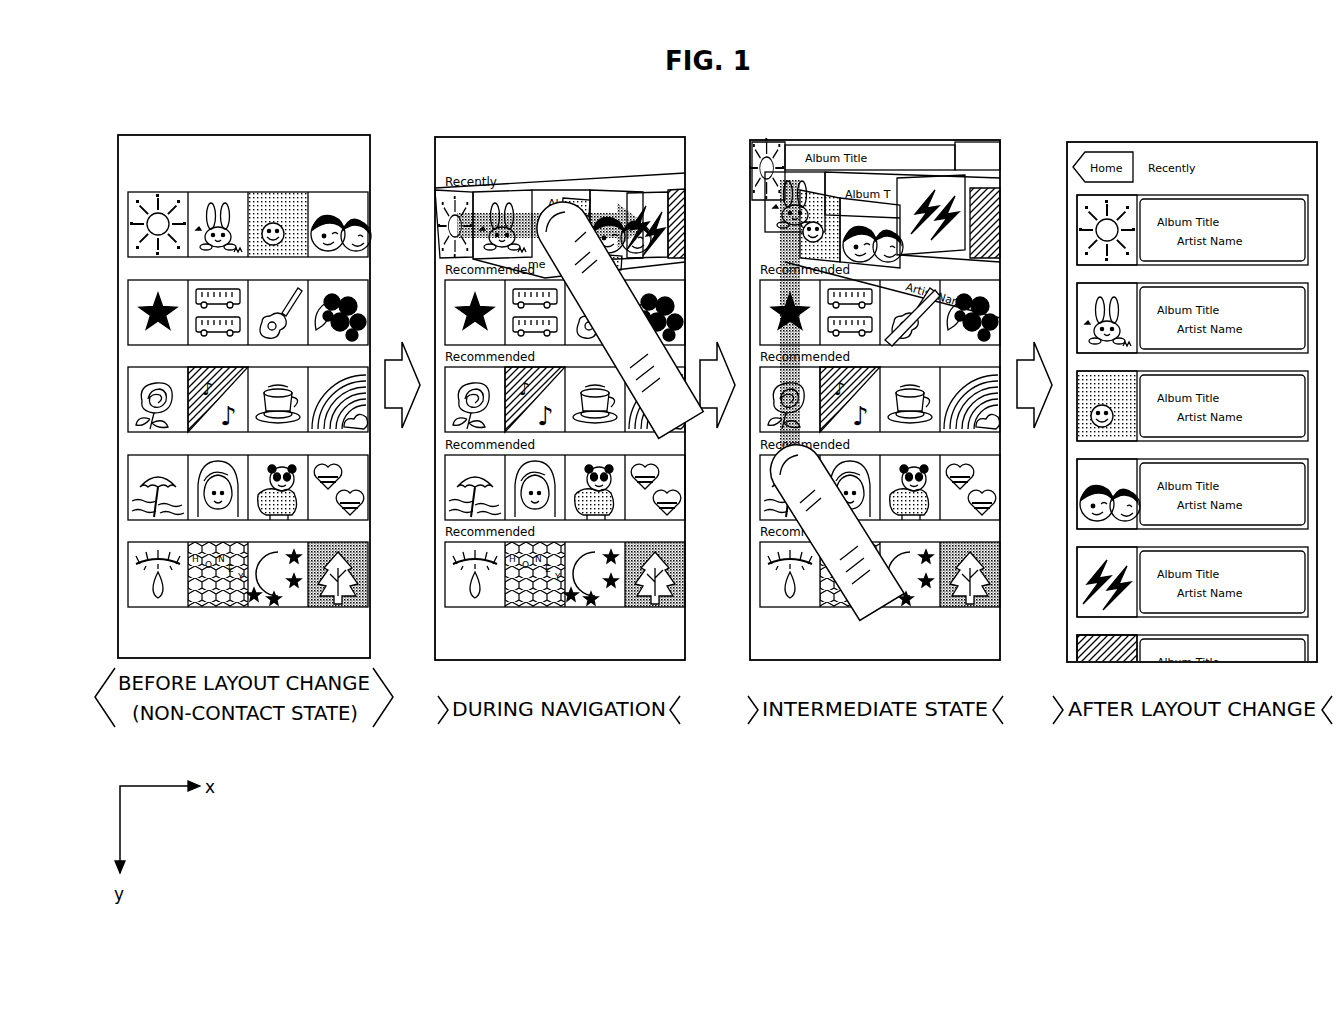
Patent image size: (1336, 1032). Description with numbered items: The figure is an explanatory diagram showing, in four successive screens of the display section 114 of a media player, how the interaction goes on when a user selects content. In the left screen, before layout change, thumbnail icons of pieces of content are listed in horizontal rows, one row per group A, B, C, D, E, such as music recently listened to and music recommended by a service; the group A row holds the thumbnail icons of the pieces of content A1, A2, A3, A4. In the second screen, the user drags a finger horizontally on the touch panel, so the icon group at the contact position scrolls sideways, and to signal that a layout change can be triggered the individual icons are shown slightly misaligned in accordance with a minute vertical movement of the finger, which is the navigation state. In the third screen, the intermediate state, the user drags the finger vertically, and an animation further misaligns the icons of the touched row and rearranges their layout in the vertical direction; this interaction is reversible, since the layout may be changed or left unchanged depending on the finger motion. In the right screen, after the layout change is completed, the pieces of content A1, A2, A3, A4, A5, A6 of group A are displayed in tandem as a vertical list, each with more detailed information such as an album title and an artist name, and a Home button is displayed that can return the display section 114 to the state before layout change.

The display section 114 is at (172, 135).
The group A is at (128, 226).
The group B is at (128, 313).
The group C is at (128, 401).
The group D is at (128, 489).
The group E is at (128, 576).
The piece of content A1 is at (128, 195).
The piece of content A2 is at (220, 192).
The piece of content A3 is at (280, 192).
The piece of content A4 is at (340, 192).
The piece of content A5 is at (1077, 578).
The piece of content A6 is at (1077, 648).